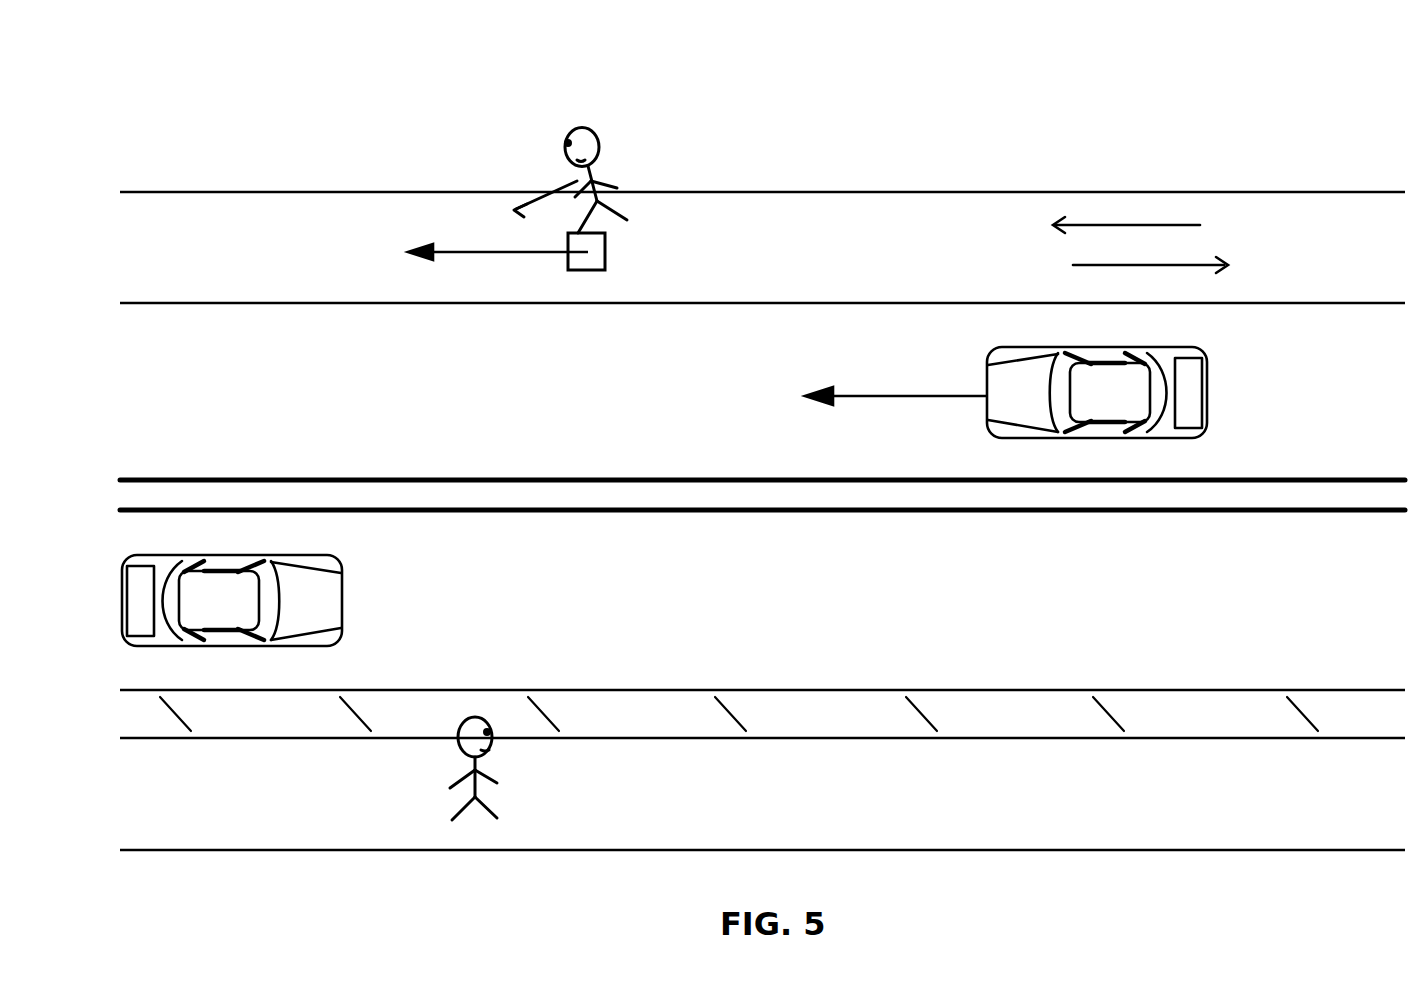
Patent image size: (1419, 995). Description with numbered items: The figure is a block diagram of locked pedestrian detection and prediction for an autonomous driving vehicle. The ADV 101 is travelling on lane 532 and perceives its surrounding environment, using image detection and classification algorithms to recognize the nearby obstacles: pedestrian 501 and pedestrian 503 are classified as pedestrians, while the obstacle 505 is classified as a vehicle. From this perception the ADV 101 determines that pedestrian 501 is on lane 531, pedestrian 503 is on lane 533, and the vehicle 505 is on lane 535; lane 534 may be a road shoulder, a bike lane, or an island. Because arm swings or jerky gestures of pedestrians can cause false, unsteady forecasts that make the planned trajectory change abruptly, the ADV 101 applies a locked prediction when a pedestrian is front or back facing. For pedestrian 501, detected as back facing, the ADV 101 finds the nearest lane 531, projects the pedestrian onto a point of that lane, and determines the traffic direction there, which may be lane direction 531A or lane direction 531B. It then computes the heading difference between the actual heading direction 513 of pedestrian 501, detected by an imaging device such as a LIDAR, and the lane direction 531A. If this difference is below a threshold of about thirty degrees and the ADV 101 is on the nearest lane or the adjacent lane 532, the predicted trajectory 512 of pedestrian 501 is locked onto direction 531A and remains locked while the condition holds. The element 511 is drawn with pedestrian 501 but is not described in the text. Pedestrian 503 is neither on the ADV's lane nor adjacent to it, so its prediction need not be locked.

The ADV 101 is at (1130, 406).
The pedestrian 501 is at (604, 140).
The pedestrian 503 is at (499, 814).
The vehicle 505 is at (343, 603).
The mobile device 511 is at (605, 253).
The predicted trajectory 512 is at (500, 250).
The actual heading direction 513 is at (556, 182).
The lane 531 is at (1390, 261).
The lane direction 531A is at (1264, 239).
The lane direction 531B is at (1066, 277).
The lane 532 is at (1387, 407).
The lane 533 is at (1384, 797).
The lane 534 is at (1387, 729).
The lane 535 is at (1390, 624).